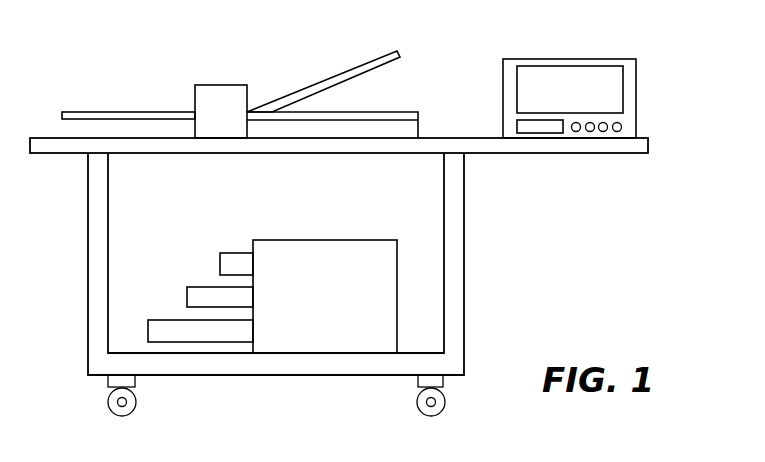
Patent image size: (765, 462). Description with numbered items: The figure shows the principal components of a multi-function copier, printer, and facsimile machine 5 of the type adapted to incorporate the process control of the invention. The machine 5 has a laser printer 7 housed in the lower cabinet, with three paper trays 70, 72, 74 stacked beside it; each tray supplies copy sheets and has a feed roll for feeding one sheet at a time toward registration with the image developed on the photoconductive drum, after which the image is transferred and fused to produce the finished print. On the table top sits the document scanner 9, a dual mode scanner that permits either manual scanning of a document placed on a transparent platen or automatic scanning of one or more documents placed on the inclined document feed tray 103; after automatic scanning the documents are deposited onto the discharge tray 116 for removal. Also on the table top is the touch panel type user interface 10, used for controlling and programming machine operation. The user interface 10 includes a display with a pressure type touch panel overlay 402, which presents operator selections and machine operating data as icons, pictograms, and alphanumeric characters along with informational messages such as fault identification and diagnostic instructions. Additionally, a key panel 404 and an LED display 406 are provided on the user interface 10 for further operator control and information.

The multi-function copier, printer, and facsimile machine 5 is at (490, 210).
The laser printer 7 is at (334, 235).
The paper tray 70 is at (220, 258).
The paper tray 72 is at (187, 288).
The paper tray 74 is at (148, 322).
The document scanner 9 is at (211, 74).
The inclined document feed tray 103 is at (365, 75).
The discharge tray 116 is at (120, 112).
The touch panel type user interface 10 is at (583, 69).
The pressure type touch panel overlay 402 is at (598, 80).
The key panel 404 is at (621, 126).
The LED display 406 is at (517, 127).